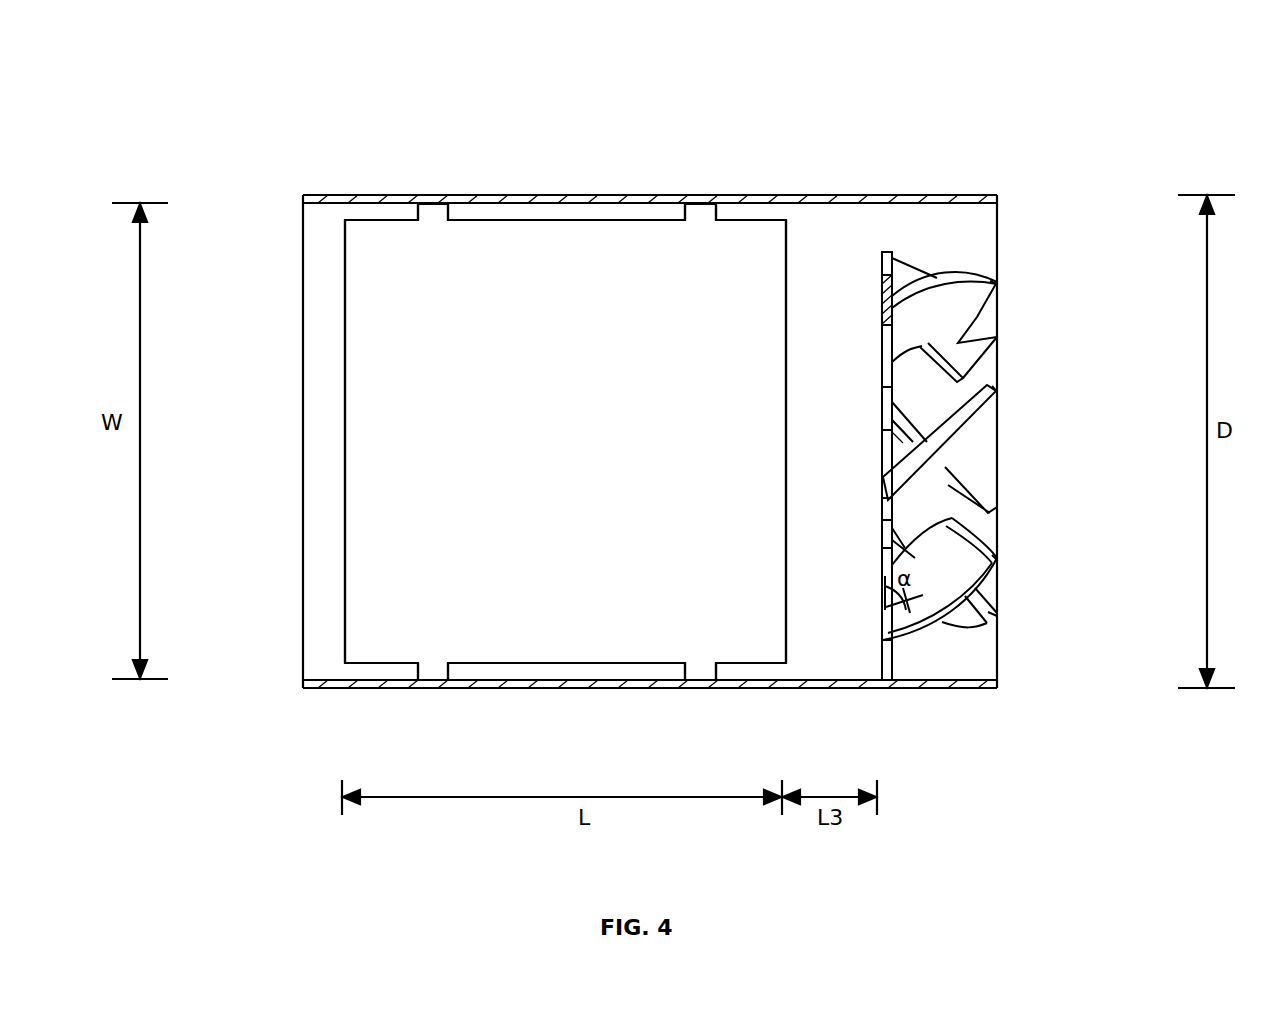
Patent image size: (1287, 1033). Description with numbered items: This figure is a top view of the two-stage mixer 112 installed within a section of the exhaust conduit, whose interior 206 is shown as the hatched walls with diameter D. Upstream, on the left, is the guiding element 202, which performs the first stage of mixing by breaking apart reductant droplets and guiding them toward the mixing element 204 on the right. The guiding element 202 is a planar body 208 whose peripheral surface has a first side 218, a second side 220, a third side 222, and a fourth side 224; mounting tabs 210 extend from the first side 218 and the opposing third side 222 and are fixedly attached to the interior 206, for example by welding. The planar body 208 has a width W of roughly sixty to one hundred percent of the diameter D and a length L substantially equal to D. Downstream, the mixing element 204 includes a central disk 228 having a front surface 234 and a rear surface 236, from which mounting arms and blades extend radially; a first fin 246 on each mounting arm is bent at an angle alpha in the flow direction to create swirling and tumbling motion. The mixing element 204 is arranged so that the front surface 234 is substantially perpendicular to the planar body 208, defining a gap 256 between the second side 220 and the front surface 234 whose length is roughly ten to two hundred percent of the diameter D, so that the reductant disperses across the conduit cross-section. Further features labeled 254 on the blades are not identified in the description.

The two-stage mixer 112 is at (205, 58).
The guiding element 202 is at (590, 472).
The mixing element 204 is at (882, 422).
The interior of the exhaust conduit 206 is at (906, 690).
The planar body 208 is at (344, 442).
The mounting tabs 210 is at (430, 200).
The first side 218 is at (540, 216).
The second side 220 is at (785, 588).
The third side 222 is at (541, 666).
The fourth side 224 is at (344, 543).
The central disk 228 is at (882, 467).
The front surface 234 is at (882, 514).
The rear surface 236 is at (892, 403).
The first fin 246 is at (998, 287).
The blade tips 254 is at (998, 333).
The gap 256 is at (849, 240).